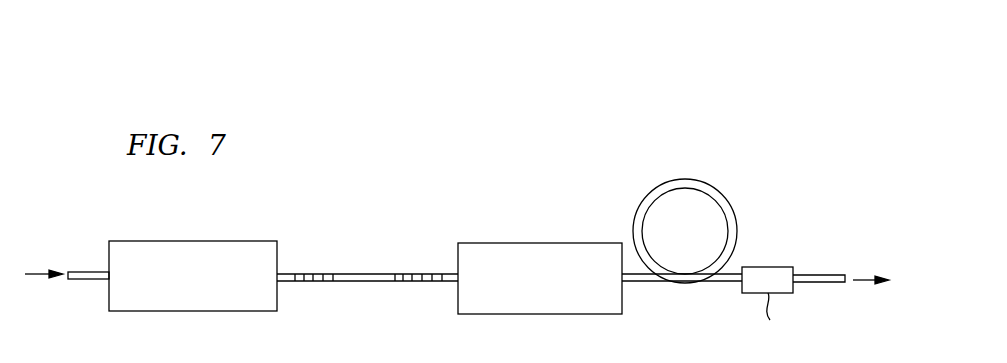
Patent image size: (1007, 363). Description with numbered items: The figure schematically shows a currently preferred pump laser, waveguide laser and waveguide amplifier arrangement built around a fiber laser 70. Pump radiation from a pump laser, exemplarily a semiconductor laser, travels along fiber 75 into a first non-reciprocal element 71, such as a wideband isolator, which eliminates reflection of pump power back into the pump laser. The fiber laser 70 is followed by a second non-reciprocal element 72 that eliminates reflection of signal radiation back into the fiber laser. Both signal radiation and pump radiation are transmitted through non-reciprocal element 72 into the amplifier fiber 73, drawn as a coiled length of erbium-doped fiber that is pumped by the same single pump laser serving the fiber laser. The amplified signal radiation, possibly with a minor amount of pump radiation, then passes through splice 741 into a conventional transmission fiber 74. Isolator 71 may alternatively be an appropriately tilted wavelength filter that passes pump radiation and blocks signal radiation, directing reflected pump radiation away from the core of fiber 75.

The fiber laser 70 is at (388, 195).
The non-reciprocal element 71 is at (240, 241).
The non-reciprocal element 72 is at (569, 249).
The amplifier fiber 73 is at (646, 283).
The transmission fiber 74 is at (824, 275).
The splice 741 is at (772, 267).
The fiber 75 is at (93, 271).